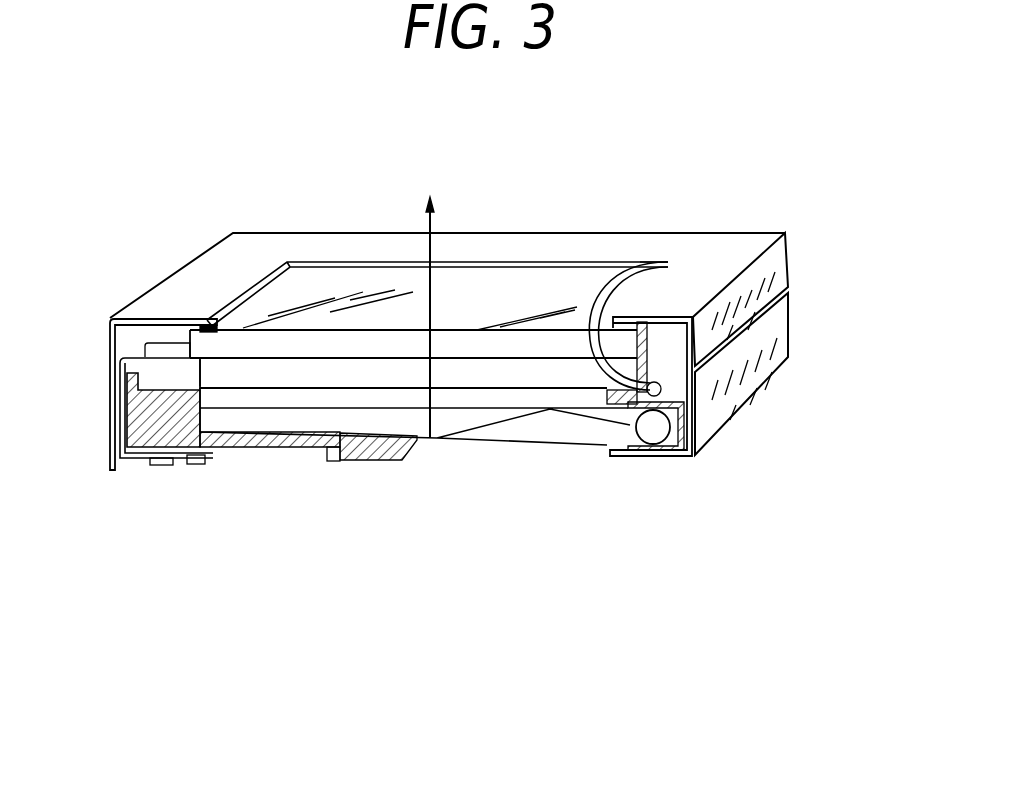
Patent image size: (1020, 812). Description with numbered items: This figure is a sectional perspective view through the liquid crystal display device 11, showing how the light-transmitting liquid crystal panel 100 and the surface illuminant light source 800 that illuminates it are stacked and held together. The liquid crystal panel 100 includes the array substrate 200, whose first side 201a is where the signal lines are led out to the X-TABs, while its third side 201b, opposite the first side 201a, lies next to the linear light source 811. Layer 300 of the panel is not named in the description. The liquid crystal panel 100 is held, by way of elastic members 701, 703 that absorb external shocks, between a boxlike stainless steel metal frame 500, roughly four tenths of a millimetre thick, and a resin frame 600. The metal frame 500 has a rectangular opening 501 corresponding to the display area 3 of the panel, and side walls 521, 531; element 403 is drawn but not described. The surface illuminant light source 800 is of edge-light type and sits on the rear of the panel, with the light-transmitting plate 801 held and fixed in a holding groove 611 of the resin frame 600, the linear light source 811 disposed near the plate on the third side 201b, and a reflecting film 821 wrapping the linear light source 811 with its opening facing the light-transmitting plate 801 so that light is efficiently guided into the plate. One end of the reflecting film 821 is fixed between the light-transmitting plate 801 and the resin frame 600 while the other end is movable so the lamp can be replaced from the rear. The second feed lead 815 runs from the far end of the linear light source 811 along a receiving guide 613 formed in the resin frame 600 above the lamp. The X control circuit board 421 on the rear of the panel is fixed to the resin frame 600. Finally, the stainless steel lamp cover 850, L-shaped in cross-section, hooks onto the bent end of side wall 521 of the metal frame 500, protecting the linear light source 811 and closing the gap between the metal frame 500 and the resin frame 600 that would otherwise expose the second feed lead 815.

The display area 3 is at (303, 283).
The liquid crystal display device 11 is at (740, 163).
The liquid crystal panel 100 is at (607, 172).
The array substrate 200 is at (500, 370).
The first side 201a is at (203, 350).
The third side 201b is at (630, 316).
The upper substrate / polarizer 300 is at (458, 345).
The frame flange 403 is at (147, 342).
The X control circuit board 421 is at (268, 460).
The metal frame 500 is at (642, 240).
The rectangular opening 501 is at (355, 265).
The side wall 521 is at (778, 260).
The side wall 531 is at (107, 408).
The resin frame 600 is at (138, 437).
The holding groove 611 is at (200, 462).
The receiving guide 613 is at (607, 393).
The elastic member 701 is at (166, 346).
The elastic member 703 is at (200, 325).
The surface illuminant light source 800 is at (767, 518).
The light-transmitting plate 801 is at (555, 437).
The linear light source 811 is at (653, 430).
The second feed lead 815 is at (653, 396).
The reflecting film 821 is at (670, 446).
The lamp cover 850 is at (777, 336).